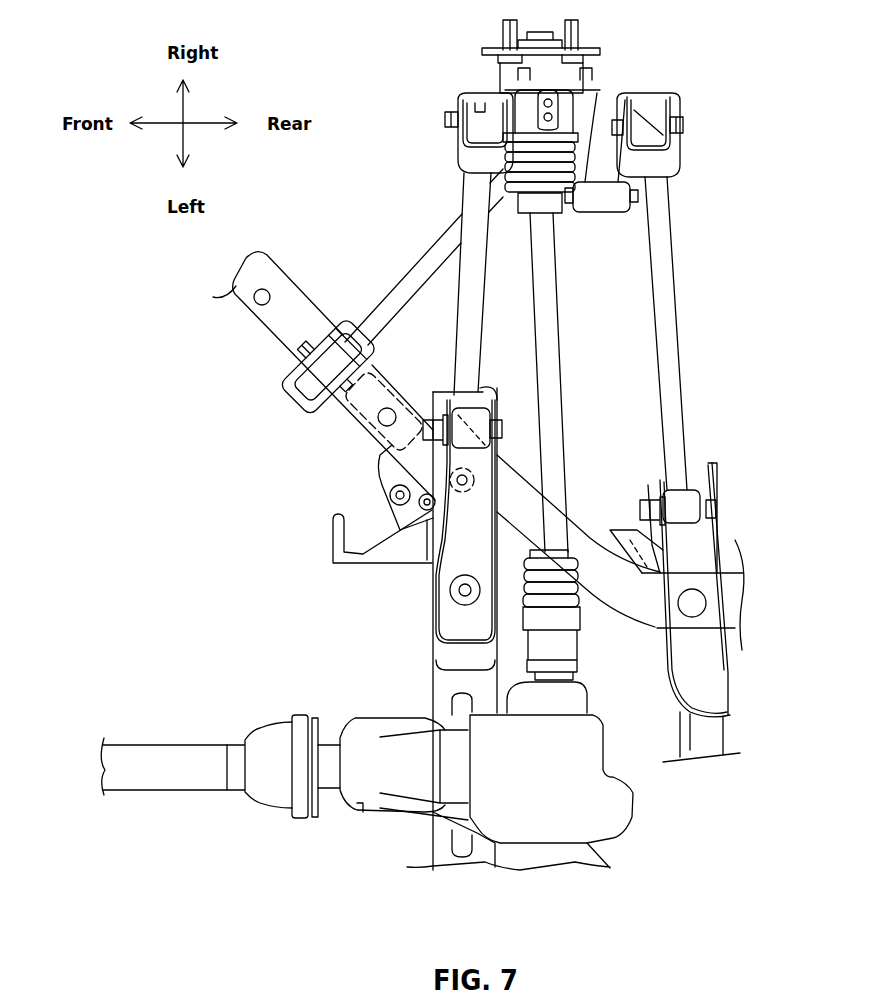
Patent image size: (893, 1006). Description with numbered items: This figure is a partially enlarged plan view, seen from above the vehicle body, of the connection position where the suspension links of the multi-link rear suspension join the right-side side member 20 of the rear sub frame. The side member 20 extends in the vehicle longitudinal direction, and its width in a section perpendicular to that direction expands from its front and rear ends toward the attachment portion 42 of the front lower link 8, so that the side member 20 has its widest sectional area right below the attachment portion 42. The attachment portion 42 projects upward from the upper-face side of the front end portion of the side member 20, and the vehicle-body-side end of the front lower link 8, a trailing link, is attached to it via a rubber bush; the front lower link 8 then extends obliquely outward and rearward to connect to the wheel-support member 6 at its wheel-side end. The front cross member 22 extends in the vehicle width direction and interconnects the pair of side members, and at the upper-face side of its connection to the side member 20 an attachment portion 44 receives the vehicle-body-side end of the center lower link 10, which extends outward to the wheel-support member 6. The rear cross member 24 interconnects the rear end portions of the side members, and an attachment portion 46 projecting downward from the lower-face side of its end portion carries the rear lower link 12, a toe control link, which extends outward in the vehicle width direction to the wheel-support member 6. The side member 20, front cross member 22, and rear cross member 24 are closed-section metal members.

The wheel-support member 6 is at (619, 92).
The front lower link 8 is at (428, 267).
The center lower link 10 is at (467, 358).
The rear lower link 12 is at (660, 288).
The side member 20 is at (287, 280).
The front cross member 22 is at (443, 657).
The rear cross member 24 is at (727, 655).
The attachment portion 42 is at (313, 398).
The attachment portion 44 is at (503, 427).
The attachment portion 46 is at (717, 490).